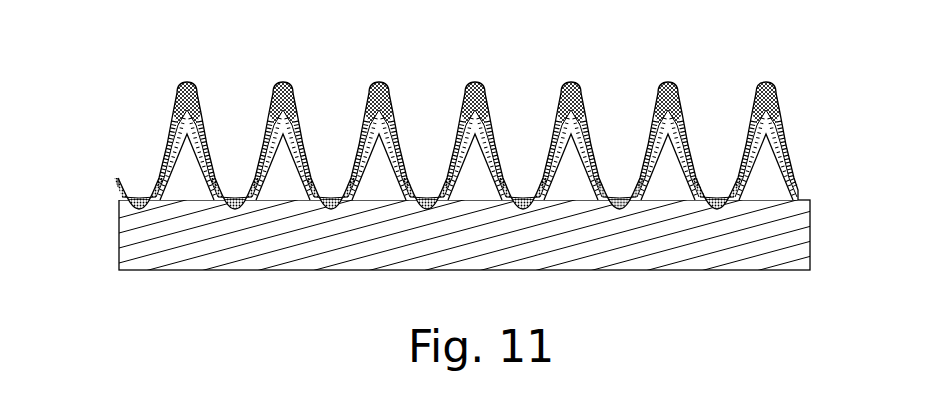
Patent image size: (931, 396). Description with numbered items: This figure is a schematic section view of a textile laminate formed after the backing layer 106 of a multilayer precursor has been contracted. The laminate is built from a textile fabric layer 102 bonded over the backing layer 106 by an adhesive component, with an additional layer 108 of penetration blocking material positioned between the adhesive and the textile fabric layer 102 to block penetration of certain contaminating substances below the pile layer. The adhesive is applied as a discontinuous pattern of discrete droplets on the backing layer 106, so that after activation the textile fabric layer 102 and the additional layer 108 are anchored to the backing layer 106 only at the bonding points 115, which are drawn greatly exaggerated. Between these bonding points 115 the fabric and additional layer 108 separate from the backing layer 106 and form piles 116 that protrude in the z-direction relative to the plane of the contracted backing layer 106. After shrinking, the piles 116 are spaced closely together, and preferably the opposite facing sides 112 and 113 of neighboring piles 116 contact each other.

The textile fabric layer 102 is at (195, 88).
The backing layer 106 is at (290, 248).
The additional layer 108 is at (298, 109).
The opposite facing side of neighboring pile 112 is at (683, 100).
The opposite facing side of neighboring pile 113 is at (753, 96).
The bonding points 115 is at (431, 193).
The piles 116 is at (391, 86).